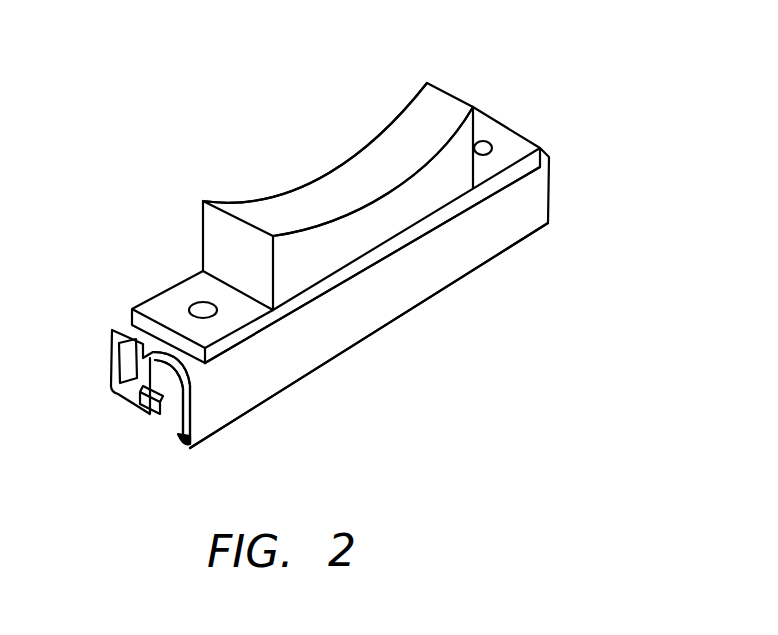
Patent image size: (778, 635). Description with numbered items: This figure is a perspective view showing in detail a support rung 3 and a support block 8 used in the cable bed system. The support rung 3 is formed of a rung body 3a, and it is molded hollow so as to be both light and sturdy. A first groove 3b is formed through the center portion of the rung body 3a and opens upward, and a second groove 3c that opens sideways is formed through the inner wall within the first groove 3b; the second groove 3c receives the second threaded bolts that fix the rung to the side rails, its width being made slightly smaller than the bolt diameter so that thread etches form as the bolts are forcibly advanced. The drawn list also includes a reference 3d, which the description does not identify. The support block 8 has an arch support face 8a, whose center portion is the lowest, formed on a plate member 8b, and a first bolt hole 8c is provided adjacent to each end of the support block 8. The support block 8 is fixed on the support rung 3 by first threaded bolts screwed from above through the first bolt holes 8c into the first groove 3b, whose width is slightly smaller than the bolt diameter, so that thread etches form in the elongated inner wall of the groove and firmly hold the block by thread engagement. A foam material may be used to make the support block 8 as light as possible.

The support rung 3 is at (543, 228).
The rung body 3a is at (488, 230).
The first groove 3b is at (143, 365).
The second groove 3c is at (135, 397).
The engaging recess 3d is at (133, 390).
The support block 8 is at (408, 106).
The arch support face 8a is at (340, 186).
The plate member 8b is at (158, 307).
The first bolt hole 8c is at (201, 301).